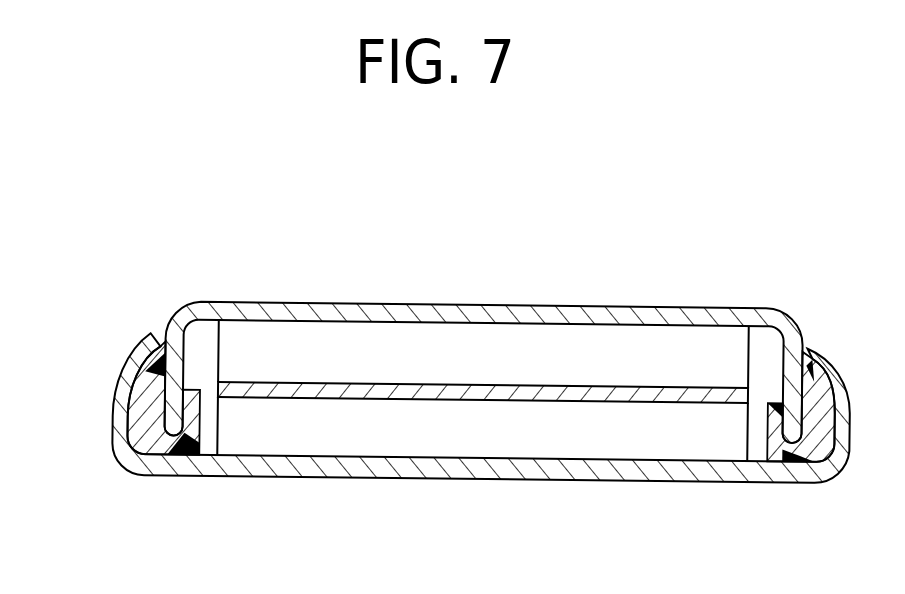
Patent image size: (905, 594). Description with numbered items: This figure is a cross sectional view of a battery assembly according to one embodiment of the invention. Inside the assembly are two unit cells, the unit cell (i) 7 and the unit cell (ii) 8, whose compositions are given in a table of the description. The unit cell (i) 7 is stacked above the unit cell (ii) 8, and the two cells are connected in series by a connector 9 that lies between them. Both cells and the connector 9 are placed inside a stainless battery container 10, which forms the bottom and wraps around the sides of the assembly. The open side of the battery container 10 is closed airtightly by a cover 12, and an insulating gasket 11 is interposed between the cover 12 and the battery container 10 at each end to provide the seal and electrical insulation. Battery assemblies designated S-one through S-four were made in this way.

The unit cell (i) 7 is at (580, 445).
The unit cell (ii) 8 is at (528, 337).
The connector 9 is at (642, 386).
The battery container 10 is at (190, 460).
The gasket 11 is at (143, 418).
The cover 12 is at (272, 303).